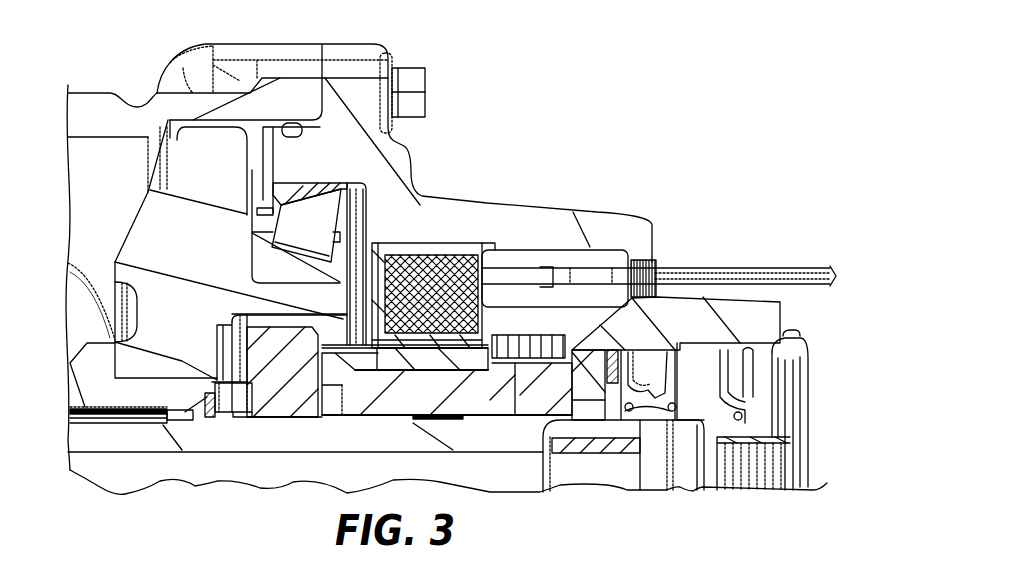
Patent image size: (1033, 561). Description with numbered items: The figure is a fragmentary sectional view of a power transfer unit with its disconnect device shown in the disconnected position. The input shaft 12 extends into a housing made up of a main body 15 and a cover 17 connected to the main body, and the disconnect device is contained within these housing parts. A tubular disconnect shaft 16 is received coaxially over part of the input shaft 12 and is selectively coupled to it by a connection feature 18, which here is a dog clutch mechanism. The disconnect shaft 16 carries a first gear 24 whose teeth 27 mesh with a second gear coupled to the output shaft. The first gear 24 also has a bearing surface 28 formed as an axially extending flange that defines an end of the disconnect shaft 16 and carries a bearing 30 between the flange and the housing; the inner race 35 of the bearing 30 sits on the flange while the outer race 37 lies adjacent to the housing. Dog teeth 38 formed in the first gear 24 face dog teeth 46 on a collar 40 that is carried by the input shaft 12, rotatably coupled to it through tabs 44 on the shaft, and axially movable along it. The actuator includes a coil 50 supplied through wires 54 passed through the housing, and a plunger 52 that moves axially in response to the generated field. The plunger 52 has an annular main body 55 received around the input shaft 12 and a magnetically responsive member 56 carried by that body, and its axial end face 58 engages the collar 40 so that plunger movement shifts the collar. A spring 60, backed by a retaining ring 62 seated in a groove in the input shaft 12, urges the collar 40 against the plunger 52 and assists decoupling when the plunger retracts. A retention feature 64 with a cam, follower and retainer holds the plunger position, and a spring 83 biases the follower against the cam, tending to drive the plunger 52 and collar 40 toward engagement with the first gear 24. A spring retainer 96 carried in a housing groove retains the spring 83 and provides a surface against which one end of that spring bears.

The input shaft 12 is at (82, 438).
The main body 15 is at (88, 113).
The disconnect shaft 16 is at (85, 384).
The cover 17 is at (358, 102).
The connection feature 18 is at (242, 422).
The first gear 24 is at (199, 247).
The teeth 27 is at (138, 215).
The bearing surface 28 is at (330, 300).
The bearing 30 is at (323, 223).
The inner race 35 is at (280, 268).
The outer race 37 is at (302, 192).
The dog teeth 38 is at (223, 363).
The collar 40 is at (291, 372).
The tabs 44 is at (327, 413).
The dog teeth 46 is at (240, 374).
The coil 50 is at (470, 268).
The plunger 52 is at (463, 416).
The wires 54 is at (587, 270).
The main body 55 is at (403, 403).
The magnetically responsive member 56 is at (470, 363).
The axial end face 58 is at (316, 368).
The spring 60 is at (228, 402).
The retaining ring 62 is at (202, 402).
The retention feature 64 is at (578, 350).
The spring 83 is at (590, 373).
The spring retainer 96 is at (615, 370).